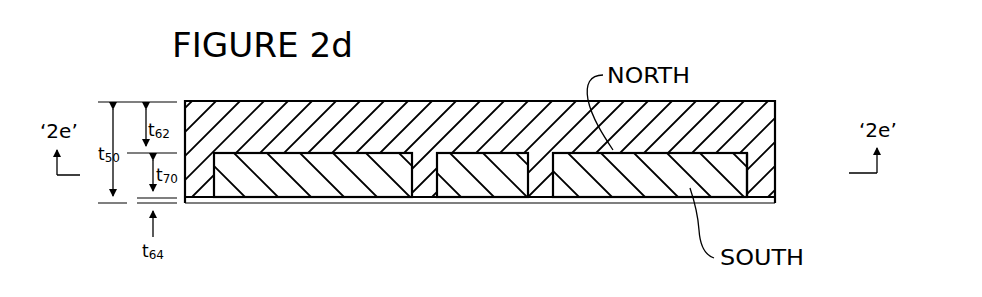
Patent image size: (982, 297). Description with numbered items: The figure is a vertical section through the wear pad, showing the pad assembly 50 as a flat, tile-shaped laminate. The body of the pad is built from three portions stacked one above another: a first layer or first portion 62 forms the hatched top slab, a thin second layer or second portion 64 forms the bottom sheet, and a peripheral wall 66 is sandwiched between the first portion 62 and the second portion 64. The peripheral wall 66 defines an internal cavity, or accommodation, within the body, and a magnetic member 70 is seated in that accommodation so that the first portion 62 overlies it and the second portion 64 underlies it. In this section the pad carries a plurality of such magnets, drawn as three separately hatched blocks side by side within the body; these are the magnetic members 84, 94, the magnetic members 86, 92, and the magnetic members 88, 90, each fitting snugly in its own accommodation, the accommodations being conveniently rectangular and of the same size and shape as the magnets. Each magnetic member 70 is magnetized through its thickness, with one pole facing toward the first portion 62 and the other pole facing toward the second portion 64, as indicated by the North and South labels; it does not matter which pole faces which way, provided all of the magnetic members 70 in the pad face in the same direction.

The pad assembly 50 is at (480, 174).
The first layer or first portion 62 is at (295, 122).
The second layer or second portion 64 is at (282, 202).
The peripheral wall 66 is at (765, 175).
The magnetic member 70 is at (489, 218).
The magnetic member 84 is at (322, 218).
The magnetic member 94 is at (372, 187).
The magnetic member 86 is at (488, 218).
The magnetic member 92 is at (480, 188).
The magnetic member 88 is at (656, 214).
The magnetic member 90 is at (653, 187).